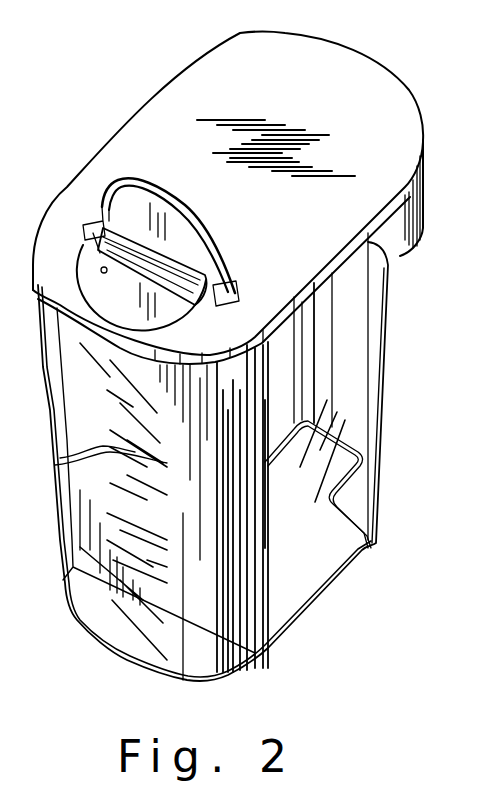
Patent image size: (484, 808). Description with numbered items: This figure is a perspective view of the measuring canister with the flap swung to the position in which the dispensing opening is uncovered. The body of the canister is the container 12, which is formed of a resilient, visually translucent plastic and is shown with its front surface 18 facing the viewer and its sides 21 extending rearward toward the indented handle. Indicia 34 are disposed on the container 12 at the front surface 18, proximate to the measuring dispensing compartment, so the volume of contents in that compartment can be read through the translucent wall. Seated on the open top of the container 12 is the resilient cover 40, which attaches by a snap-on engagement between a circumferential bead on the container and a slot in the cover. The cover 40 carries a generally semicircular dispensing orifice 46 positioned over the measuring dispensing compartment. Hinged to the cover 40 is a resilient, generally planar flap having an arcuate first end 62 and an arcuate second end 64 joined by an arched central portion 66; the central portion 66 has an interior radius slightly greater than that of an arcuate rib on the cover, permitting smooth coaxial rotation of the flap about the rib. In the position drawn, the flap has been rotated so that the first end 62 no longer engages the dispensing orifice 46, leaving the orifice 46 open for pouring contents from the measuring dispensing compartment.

The cover 40 is at (392, 107).
The container 12 is at (379, 430).
The sides 21 is at (352, 322).
The front surface 18 is at (107, 630).
The indicia 34 is at (60, 458).
The arcuate first end 62 is at (98, 214).
The arched central portion 66 is at (97, 243).
The dispensing orifice 46 is at (92, 290).
The arcuate second end 64 is at (127, 300).